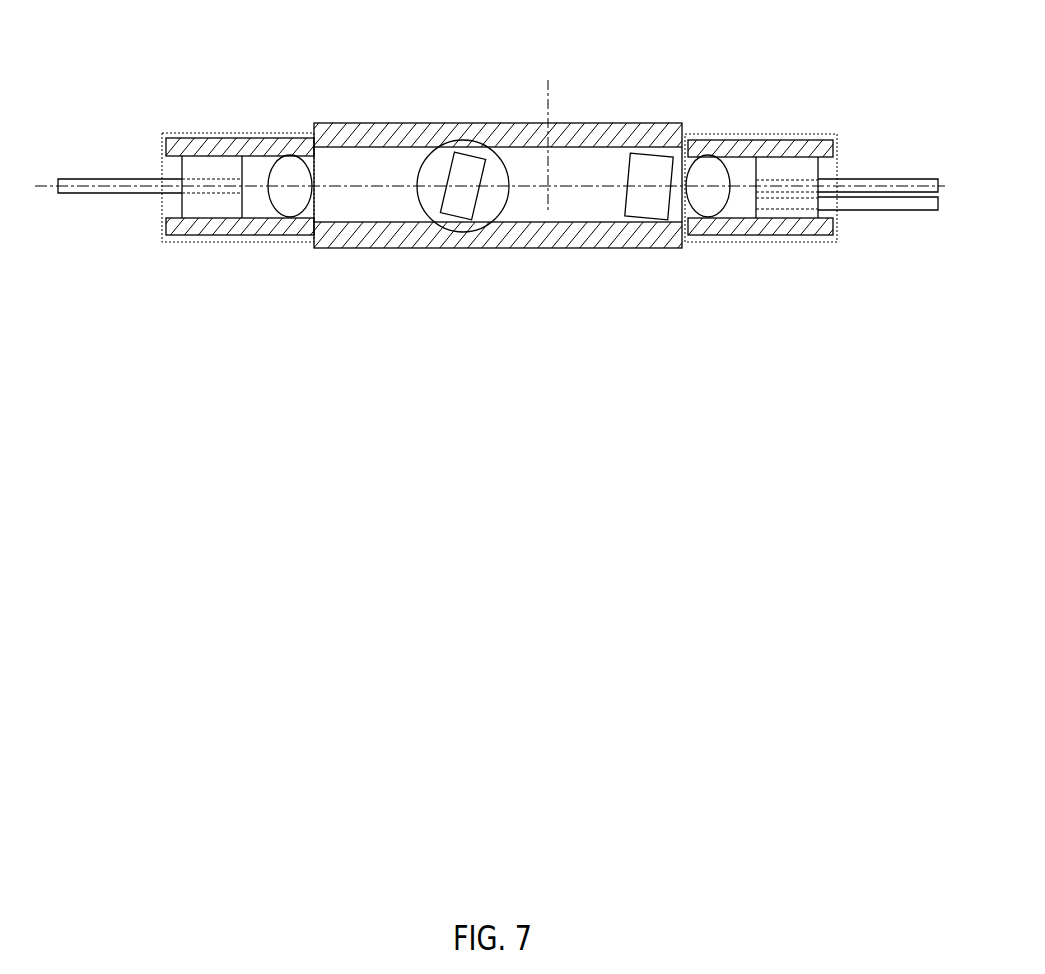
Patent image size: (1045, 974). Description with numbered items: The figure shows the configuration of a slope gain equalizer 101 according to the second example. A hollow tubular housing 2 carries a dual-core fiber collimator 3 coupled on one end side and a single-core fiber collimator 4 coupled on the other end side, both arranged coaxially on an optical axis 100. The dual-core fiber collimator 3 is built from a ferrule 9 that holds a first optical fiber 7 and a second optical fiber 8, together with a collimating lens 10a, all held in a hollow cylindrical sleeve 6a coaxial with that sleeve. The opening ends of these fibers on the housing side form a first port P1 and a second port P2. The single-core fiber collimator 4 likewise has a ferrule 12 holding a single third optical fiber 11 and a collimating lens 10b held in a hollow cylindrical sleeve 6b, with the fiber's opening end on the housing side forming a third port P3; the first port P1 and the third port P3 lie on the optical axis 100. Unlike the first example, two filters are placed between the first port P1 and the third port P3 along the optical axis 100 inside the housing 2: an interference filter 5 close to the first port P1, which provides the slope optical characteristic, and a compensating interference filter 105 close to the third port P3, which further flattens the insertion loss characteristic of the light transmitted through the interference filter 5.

The slope gain equalizer 101 is at (291, 45).
The housing 2 is at (600, 248).
The dual-core fiber collimator 3 is at (808, 243).
The single-core fiber collimator 4 is at (243, 242).
The interference filter 5 is at (655, 163).
The sleeve 6a is at (795, 148).
The sleeve 6b is at (192, 236).
The first optical fiber 7 is at (869, 184).
The second optical fiber 8 is at (884, 210).
The ferrule 9 is at (781, 215).
The collimating lens 10a is at (703, 200).
The collimating lens 10b is at (292, 168).
The third optical fiber 11 is at (97, 193).
The ferrule 12 is at (206, 160).
The optical axis 100 is at (545, 130).
The compensating interference filter 105 is at (468, 163).
The first port P1 is at (755, 182).
The second port P2 is at (755, 205).
The third port P3 is at (244, 187).